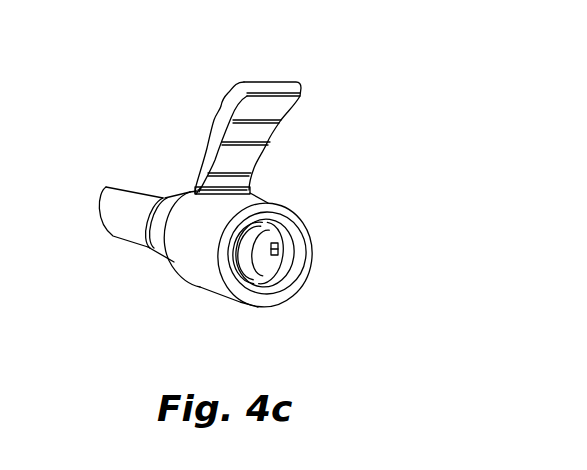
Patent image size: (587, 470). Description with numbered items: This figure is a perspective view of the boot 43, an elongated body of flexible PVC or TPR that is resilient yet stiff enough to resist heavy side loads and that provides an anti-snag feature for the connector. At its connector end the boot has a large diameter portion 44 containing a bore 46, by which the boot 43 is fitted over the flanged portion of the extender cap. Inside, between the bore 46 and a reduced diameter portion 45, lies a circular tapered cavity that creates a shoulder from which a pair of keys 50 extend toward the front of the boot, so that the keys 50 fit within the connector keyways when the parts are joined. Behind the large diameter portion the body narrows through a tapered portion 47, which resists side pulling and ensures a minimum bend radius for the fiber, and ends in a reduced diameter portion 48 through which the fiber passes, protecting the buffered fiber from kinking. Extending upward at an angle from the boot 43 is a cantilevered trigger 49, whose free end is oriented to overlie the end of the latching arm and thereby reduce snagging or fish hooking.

The boot 43 is at (322, 206).
The large diameter portion 44 is at (205, 283).
The reduced diameter portion 45 is at (261, 240).
The bore 46 is at (285, 260).
The tapered portion 47 is at (165, 210).
The reduced diameter portion 48 is at (122, 185).
The cantilevered trigger 49 is at (238, 82).
The keys 50 is at (273, 248).